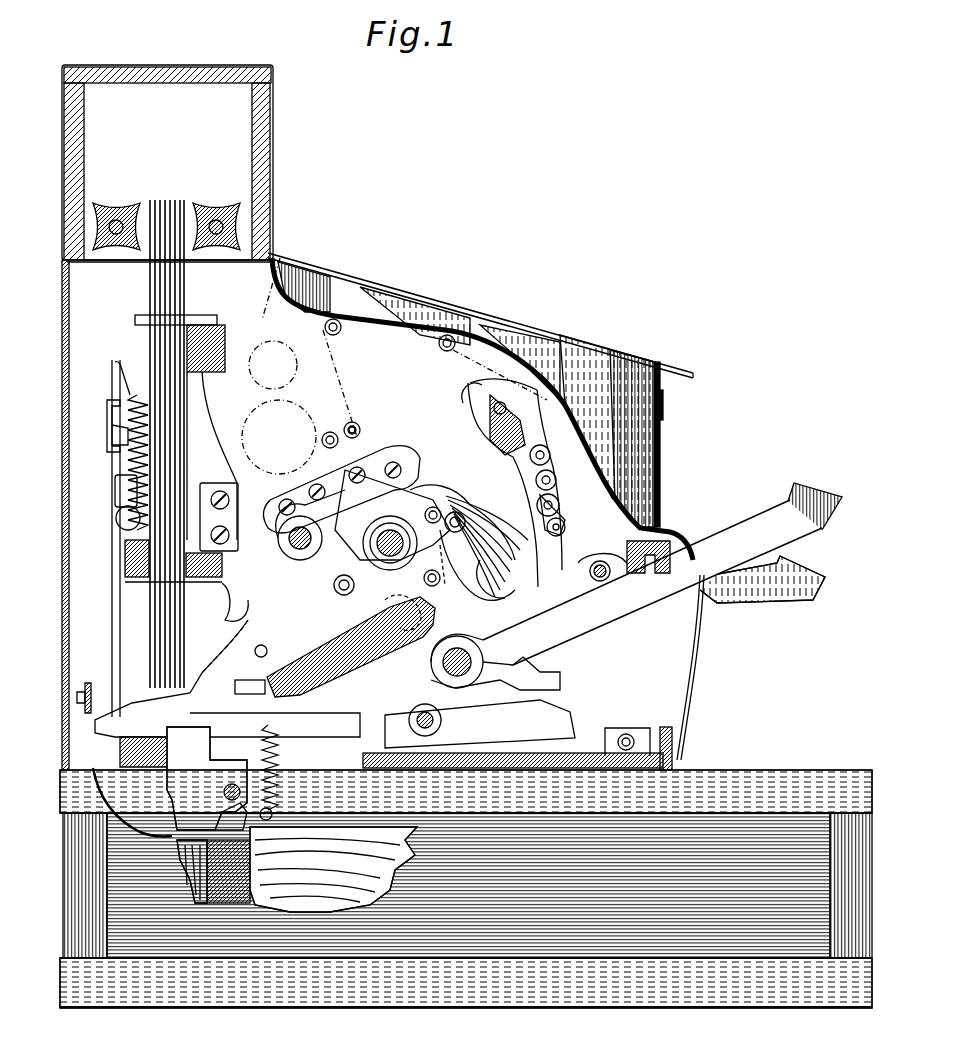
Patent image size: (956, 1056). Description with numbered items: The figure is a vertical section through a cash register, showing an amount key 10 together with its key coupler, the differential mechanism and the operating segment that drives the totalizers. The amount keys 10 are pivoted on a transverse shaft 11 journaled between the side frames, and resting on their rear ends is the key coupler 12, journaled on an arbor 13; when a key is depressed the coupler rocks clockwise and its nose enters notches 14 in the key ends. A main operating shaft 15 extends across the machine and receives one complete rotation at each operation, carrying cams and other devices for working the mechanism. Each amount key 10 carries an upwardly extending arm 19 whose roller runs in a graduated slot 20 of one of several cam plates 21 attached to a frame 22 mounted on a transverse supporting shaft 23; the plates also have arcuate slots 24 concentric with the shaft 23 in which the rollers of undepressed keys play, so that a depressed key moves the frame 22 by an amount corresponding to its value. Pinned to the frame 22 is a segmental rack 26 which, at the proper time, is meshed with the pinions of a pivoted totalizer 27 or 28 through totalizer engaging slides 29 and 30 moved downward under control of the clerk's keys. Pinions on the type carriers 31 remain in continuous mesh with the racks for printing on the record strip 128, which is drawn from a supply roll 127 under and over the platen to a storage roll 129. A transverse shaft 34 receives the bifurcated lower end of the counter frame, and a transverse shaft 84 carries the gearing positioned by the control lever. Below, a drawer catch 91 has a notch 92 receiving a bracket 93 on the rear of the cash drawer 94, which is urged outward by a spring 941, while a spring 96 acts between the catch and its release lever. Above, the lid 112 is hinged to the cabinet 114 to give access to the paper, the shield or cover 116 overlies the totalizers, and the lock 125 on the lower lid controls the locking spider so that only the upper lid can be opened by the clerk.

The amount keys 10 is at (790, 520).
The shaft 11 is at (470, 660).
The key coupler 12 is at (327, 632).
The arbor 13 is at (410, 610).
The notches 14 is at (242, 688).
The main operating shaft 15 is at (301, 549).
The arm 19 is at (482, 563).
The slots 20 is at (504, 598).
The cam plates 21 is at (520, 566).
The frame 22 is at (389, 520).
The supporting shaft 23 is at (389, 534).
The arcuate slots 24 is at (451, 576).
The segmental rack 26 is at (432, 450).
The totalizer 27 is at (550, 460).
The totalizer 28 is at (568, 528).
The totalizer engaging slide 29 is at (557, 479).
The totalizer engaging slide 30 is at (560, 503).
The type carriers 31 is at (463, 403).
The transverse shaft 34 is at (600, 561).
The transverse shaft 84 is at (425, 715).
The drawer catch 91 is at (235, 750).
The notch 92 is at (220, 813).
The bracket 93 is at (222, 830).
The cash drawer 94 is at (308, 826).
The spring 96 is at (280, 738).
The spring 941 is at (122, 789).
The lid 112 is at (527, 328).
The cabinet 114 is at (412, 318).
The shield or cover 116 is at (660, 468).
The lock 125 is at (663, 407).
The supply roll 127 is at (300, 410).
The record strip 128 is at (347, 412).
The storage roll 129 is at (275, 342).